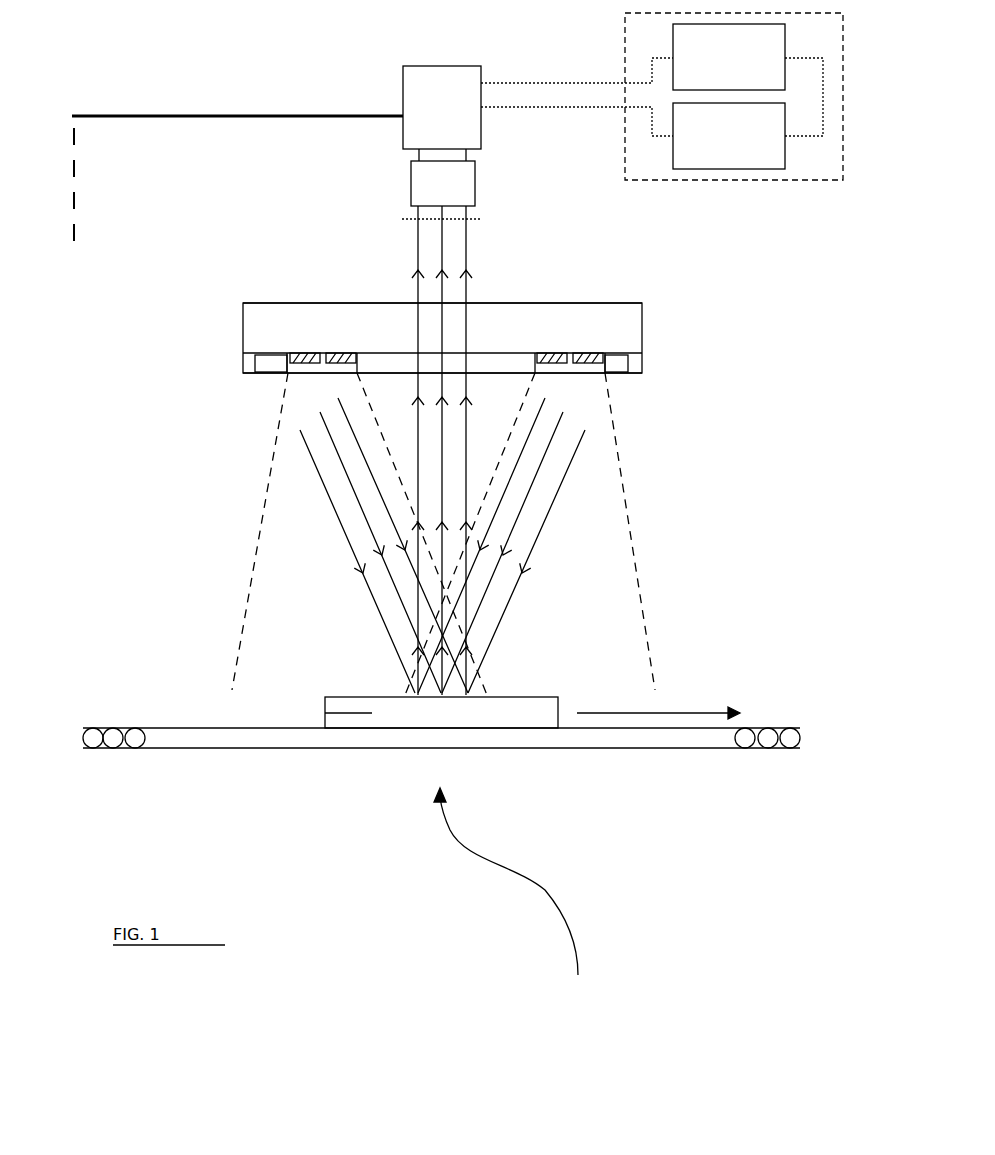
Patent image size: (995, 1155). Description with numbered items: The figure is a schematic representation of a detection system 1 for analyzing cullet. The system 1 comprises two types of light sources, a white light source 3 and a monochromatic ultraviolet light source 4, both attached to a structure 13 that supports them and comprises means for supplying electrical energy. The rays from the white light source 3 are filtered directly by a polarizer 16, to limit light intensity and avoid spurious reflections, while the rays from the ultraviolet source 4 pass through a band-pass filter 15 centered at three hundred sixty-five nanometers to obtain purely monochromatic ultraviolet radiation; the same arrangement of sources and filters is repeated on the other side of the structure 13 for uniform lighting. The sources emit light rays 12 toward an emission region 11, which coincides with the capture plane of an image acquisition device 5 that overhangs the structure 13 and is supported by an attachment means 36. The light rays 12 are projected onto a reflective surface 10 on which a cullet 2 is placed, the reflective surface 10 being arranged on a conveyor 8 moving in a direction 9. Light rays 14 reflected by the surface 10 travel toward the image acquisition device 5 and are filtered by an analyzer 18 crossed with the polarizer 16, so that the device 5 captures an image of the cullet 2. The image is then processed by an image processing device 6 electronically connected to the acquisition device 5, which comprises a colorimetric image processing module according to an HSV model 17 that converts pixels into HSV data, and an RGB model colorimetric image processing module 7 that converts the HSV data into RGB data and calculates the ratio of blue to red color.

The detection system 1 is at (509, 894).
The cullet 2 is at (415, 693).
The white light source 3 is at (287, 351).
The monochromatic ultraviolet light source 4 is at (320, 355).
The image acquisition device 5 is at (403, 90).
The image processing device 6 is at (625, 50).
The RGB model colorimetric image processing module 7 is at (729, 136).
The conveyor 8 is at (683, 748).
The direction 9 is at (693, 713).
The reflective surface 10 is at (325, 712).
The emission region 11 is at (450, 674).
The light rays 12 is at (320, 483).
The structure 13 is at (273, 301).
The light rays 14 is at (417, 290).
The band-pass filter 15 is at (282, 373).
The polarizer 16 is at (312, 375).
The colorimetric image processing module according to an HSV model 17 is at (729, 57).
The analyzer 18 is at (480, 219).
The attachment means 36 is at (140, 116).